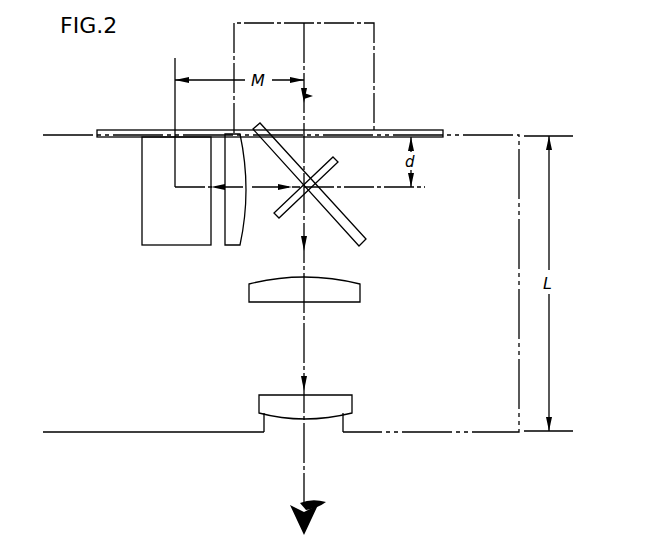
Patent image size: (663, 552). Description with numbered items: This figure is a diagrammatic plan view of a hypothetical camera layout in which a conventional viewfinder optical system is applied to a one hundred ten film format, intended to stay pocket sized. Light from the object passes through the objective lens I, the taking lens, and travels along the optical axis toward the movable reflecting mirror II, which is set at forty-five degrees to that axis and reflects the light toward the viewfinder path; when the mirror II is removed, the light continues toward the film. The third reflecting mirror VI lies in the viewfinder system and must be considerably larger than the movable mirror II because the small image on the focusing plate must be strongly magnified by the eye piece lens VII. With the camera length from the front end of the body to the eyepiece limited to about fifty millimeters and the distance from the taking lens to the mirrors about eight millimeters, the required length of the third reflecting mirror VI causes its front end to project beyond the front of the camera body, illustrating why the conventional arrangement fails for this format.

The objective lens I is at (374, 50).
The movable reflecting mirror II is at (326, 170).
The third reflecting mirror VI is at (366, 240).
The eye piece lens VII is at (355, 302).